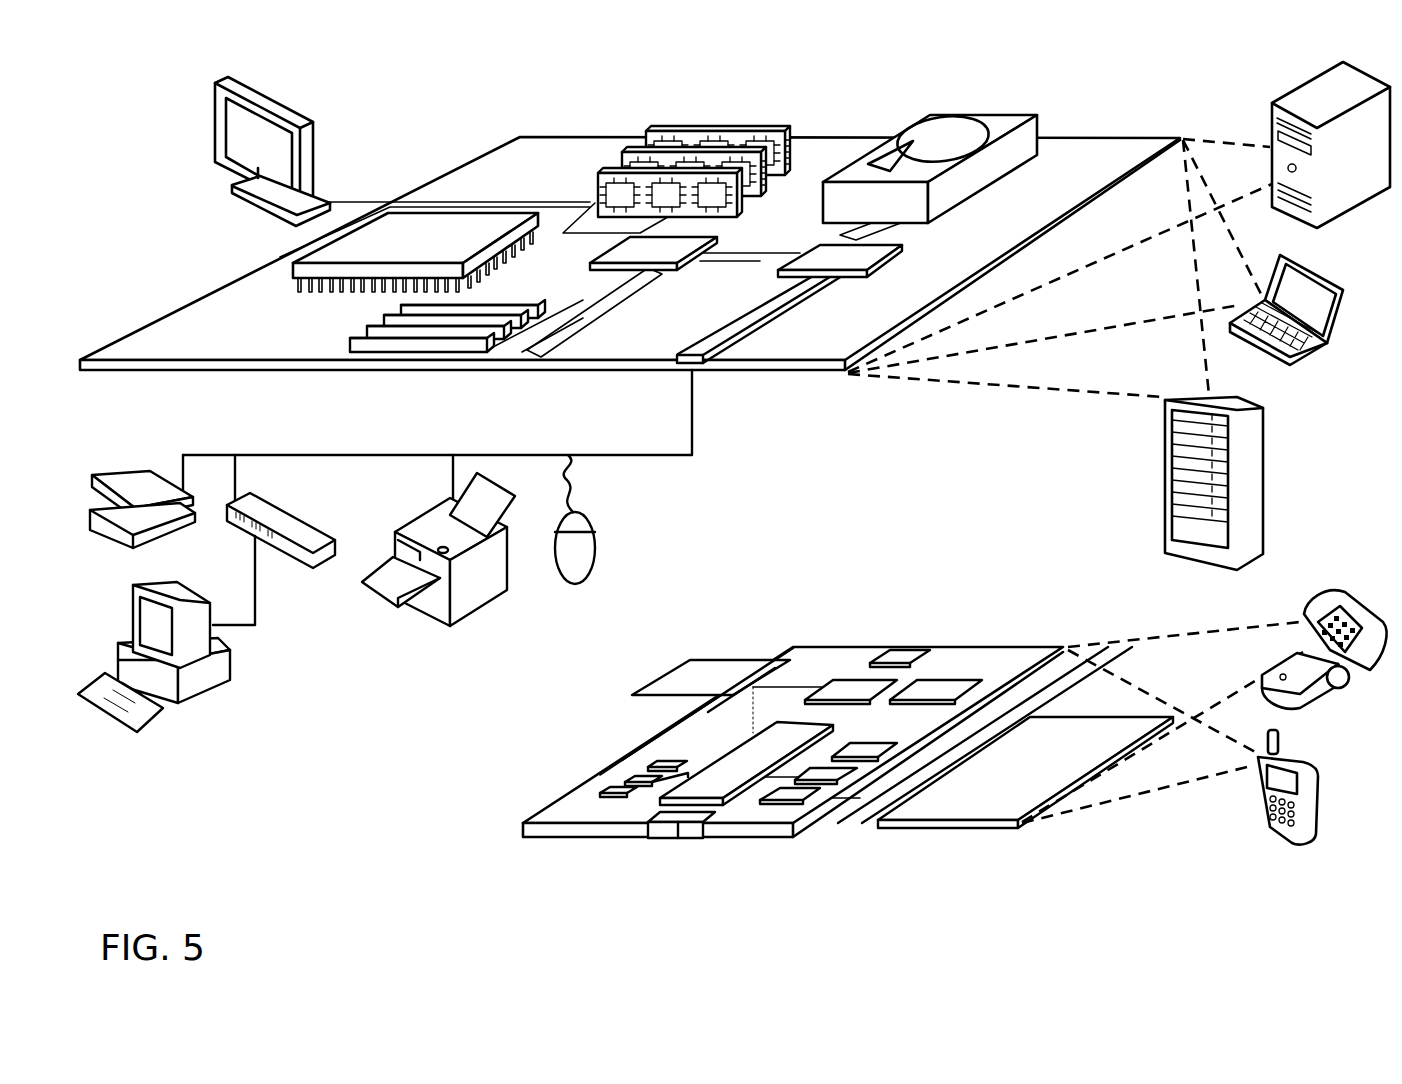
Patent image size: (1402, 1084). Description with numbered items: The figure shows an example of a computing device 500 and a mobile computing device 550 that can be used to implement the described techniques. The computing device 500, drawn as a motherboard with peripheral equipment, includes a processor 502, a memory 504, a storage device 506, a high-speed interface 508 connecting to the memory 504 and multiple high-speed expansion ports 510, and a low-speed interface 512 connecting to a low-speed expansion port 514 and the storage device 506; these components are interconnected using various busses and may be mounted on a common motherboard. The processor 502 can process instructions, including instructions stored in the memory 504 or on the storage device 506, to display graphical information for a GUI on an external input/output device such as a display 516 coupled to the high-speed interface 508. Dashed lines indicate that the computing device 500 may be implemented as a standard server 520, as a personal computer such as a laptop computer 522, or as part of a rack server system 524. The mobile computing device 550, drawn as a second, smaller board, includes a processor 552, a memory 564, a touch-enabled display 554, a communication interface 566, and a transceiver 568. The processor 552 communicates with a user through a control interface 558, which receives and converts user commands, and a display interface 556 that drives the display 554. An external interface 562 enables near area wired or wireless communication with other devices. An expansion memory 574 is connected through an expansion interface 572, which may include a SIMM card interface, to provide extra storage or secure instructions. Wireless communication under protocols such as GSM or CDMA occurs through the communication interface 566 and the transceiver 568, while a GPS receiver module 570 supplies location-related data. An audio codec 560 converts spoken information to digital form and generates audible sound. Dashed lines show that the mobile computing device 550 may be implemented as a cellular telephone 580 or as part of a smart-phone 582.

The computing device 500 is at (433, 106).
The processor 502 is at (294, 268).
The memory 504 is at (657, 97).
The storage device 506 is at (914, 134).
The high-speed interface 508 is at (622, 262).
The high-speed expansion ports 510 is at (378, 334).
The low-speed interface 512 is at (815, 254).
The low-speed expansion port 514 is at (700, 363).
The display 516 is at (228, 86).
The standard server 520 is at (1272, 118).
The laptop computer 522 is at (1337, 278).
The rack server system 524 is at (1165, 450).
The mobile computing device 550 is at (495, 838).
The processor 552 is at (718, 800).
The display 554 is at (985, 808).
The display interface 556 is at (793, 797).
The control interface 558 is at (820, 775).
The audio codec 560 is at (860, 748).
The external interface 562 is at (682, 838).
The memory 564 is at (628, 770).
The communication interface 566 is at (853, 690).
The transceiver 568 is at (937, 690).
The GPS receiver module 570 is at (905, 650).
The expansion interface 572 is at (773, 660).
The expansion memory 574 is at (692, 660).
The cellular telephone 580 is at (1322, 594).
The smart-phone 582 is at (1262, 798).